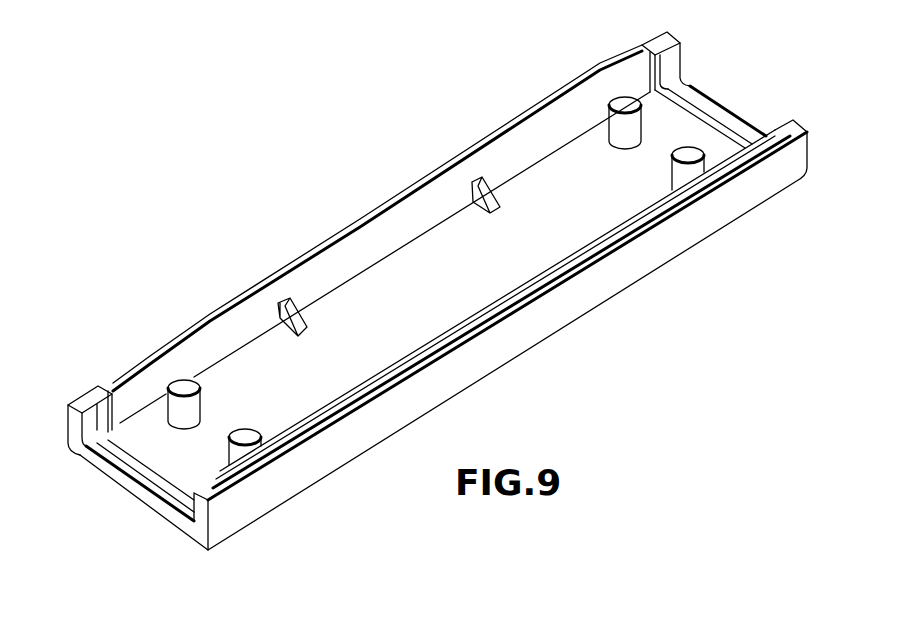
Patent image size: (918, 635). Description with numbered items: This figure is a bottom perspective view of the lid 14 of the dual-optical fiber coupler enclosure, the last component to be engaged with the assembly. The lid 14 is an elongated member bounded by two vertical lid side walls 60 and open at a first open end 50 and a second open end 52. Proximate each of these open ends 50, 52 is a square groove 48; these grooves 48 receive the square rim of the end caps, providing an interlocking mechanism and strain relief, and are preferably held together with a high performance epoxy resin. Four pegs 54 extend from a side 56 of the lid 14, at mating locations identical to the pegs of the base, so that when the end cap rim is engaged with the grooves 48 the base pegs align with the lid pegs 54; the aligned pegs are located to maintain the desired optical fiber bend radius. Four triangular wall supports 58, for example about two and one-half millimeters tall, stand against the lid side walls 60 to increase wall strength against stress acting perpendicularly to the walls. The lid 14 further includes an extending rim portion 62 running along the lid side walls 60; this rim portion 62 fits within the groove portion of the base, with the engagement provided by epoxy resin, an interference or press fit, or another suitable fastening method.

The lid 14 is at (155, 127).
The square groove 48 is at (100, 400).
The first open end 50 is at (126, 468).
The second open end 52 is at (717, 110).
The peg 54 is at (183, 387).
The side 56 is at (485, 280).
The triangular wall support 58 is at (300, 303).
The lid side wall 60 is at (342, 267).
The extending rim portion 62 is at (405, 188).